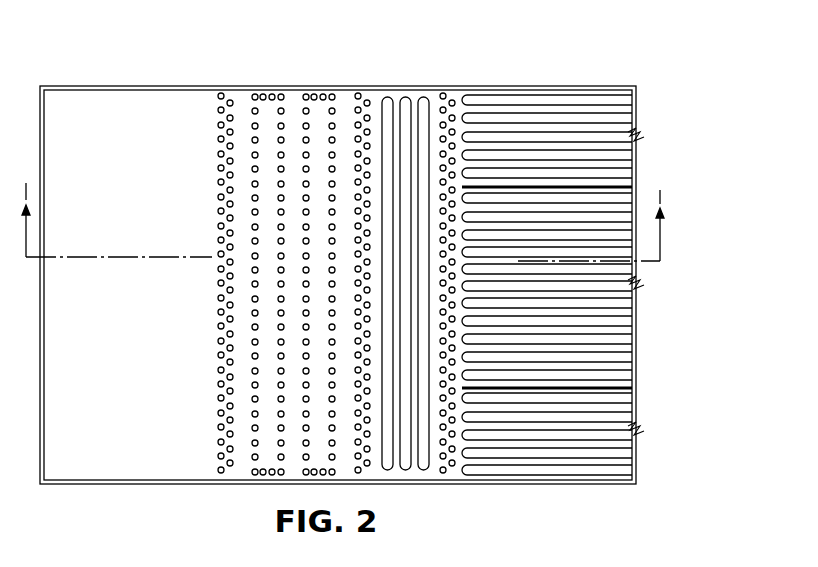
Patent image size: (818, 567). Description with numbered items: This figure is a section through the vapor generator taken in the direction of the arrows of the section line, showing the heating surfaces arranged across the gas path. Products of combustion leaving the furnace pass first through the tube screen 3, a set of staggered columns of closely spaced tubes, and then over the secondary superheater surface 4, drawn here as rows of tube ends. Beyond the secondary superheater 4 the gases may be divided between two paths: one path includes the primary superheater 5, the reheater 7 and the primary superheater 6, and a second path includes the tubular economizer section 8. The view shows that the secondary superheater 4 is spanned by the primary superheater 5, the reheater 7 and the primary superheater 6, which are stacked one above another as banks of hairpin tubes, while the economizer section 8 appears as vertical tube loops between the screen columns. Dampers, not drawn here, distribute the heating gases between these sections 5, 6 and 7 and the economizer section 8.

The tube screen 3 is at (216, 368).
The secondary superheater surface 4 is at (316, 96).
The primary superheater 5 is at (739, 188).
The primary superheater 6 is at (668, 488).
The reheater 7 is at (672, 390).
The economizer section 8 is at (406, 96).